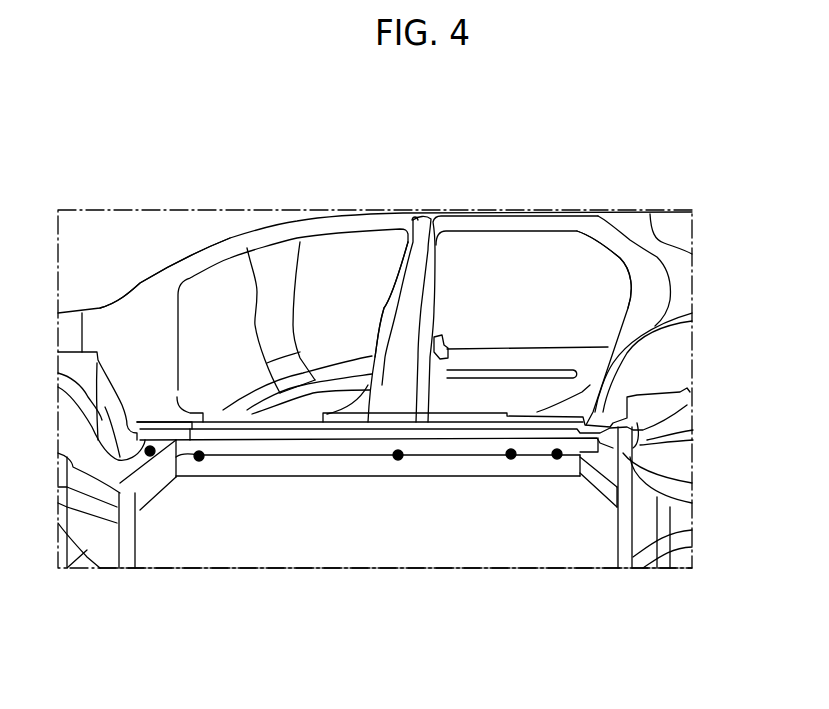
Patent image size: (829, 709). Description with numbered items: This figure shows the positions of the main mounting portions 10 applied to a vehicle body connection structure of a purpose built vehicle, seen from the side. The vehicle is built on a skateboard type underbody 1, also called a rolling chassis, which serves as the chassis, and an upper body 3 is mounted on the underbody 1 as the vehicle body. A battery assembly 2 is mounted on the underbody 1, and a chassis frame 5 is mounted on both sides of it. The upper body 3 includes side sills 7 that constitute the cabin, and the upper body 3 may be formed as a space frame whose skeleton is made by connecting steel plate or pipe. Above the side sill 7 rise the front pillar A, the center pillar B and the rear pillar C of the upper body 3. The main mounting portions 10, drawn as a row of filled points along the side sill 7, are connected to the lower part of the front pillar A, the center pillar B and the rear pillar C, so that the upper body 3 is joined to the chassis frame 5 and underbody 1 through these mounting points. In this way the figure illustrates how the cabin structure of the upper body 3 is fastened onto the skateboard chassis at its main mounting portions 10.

The underbody 1 is at (705, 517).
The battery assembly 2 is at (334, 576).
The upper body 3 is at (705, 317).
The chassis frame 5 is at (272, 437).
The side sill 7 is at (228, 424).
The main mounting portion 10 is at (400, 473).
The front pillar A is at (142, 317).
The center pillar B is at (418, 260).
The rear pillar C is at (627, 333).